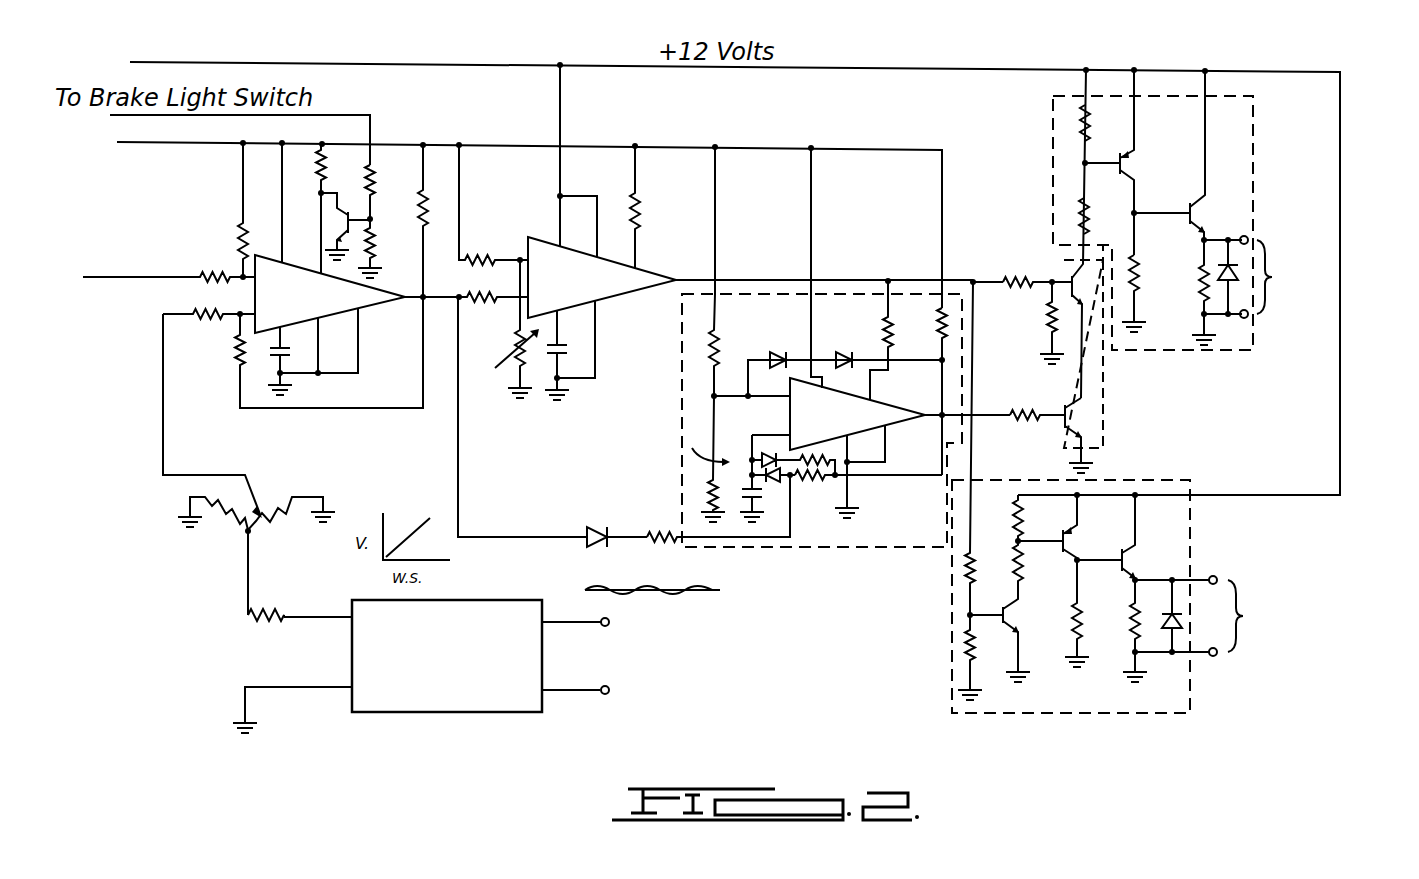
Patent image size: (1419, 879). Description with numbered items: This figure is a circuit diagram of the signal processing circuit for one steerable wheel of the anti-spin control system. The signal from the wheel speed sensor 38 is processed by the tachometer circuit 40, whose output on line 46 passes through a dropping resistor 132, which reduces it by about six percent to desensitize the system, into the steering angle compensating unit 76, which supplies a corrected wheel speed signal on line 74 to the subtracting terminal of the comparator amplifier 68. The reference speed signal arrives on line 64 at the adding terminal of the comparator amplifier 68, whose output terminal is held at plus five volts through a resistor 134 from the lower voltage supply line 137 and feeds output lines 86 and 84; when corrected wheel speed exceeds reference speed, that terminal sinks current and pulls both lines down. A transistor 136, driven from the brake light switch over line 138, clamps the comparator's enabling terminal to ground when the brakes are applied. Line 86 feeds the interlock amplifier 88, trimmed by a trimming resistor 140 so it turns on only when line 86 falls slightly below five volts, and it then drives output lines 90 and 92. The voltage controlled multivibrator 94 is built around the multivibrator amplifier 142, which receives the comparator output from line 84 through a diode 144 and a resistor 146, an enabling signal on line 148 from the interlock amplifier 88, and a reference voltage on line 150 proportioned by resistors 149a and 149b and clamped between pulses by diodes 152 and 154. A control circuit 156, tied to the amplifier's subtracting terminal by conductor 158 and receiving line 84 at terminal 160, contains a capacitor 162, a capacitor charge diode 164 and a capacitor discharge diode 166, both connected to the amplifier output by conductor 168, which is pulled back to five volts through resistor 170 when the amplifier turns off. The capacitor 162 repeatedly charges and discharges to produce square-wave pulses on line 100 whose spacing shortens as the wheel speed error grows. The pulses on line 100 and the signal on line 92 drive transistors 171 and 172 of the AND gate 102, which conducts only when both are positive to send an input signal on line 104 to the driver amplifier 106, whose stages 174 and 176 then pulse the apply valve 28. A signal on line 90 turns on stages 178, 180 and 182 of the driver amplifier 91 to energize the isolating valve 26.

The isolating valve 26 is at (1307, 616).
The apply valve 28 is at (1293, 282).
The wheel speed sensor 38 is at (678, 656).
The tachometer circuit 40 is at (446, 714).
The line 46 is at (316, 622).
The line 64 is at (127, 286).
The comparator amplifier 68 is at (378, 300).
The line 74 is at (163, 394).
The steering angle compensating unit 76 is at (280, 497).
The output line 84 is at (458, 440).
The output line 86 is at (460, 300).
The interlock amplifier 88 is at (644, 300).
The output line 90 is at (976, 351).
The driver amplifier 91 is at (1180, 480).
The output line 92 is at (990, 279).
The voltage controlled multivibrator 94 is at (846, 290).
The output line 100 is at (989, 413).
The AND gate 102 is at (1105, 382).
The line 104 is at (1062, 247).
The driver amplifier 106 is at (1253, 133).
The dropping resistor 132 is at (258, 626).
The resistor 134 is at (436, 210).
The transistor 136 is at (346, 222).
The lower voltage supply line 137 is at (796, 147).
The line 138 is at (372, 126).
The trimming resistor 140 is at (501, 331).
The multivibrator amplifier 142 is at (903, 421).
The diode 144 is at (600, 527).
The resistor 146 is at (665, 517).
The line 148 is at (889, 306).
The resistor 149a is at (706, 346).
The resistor 149b is at (712, 473).
The line 150 is at (726, 393).
The diode 152 is at (784, 350).
The diode 154 is at (845, 351).
The control circuit 156 is at (694, 445).
The conductor 158 is at (780, 426).
The terminal 160 is at (791, 478).
The capacitor 162 is at (740, 490).
The capacitor charge diode 164 is at (750, 460).
The capacitor discharge diode 166 is at (777, 483).
The conductor 168 is at (900, 477).
The resistor 170 is at (945, 323).
The transistor 171 is at (1084, 420).
The transistor 172 is at (1080, 272).
The amplification stage 174 is at (1128, 170).
The amplification stage 176 is at (1197, 207).
The stage 178 is at (1010, 611).
The stage 180 is at (1078, 546).
The stage 182 is at (1128, 561).